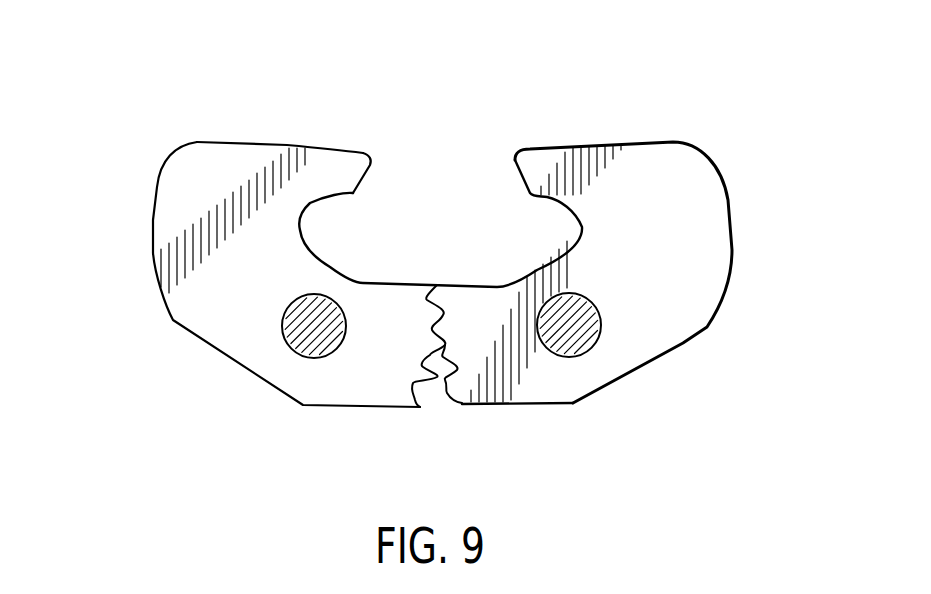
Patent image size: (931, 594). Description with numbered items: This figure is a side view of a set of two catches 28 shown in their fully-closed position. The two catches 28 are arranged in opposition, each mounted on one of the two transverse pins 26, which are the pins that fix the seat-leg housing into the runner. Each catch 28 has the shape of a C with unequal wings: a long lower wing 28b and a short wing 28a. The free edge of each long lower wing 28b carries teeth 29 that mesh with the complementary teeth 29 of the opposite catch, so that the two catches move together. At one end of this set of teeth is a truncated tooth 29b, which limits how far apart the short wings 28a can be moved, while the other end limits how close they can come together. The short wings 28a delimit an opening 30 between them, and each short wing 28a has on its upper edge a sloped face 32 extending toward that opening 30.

The transverse pin 26 is at (287, 337).
The catch 28 is at (130, 210).
The short wing 28a is at (303, 167).
The long lower wing 28b is at (370, 375).
The teeth 29 is at (440, 340).
The truncated tooth 29b is at (420, 407).
The opening 30 is at (479, 185).
The sloped face 32 is at (347, 143).